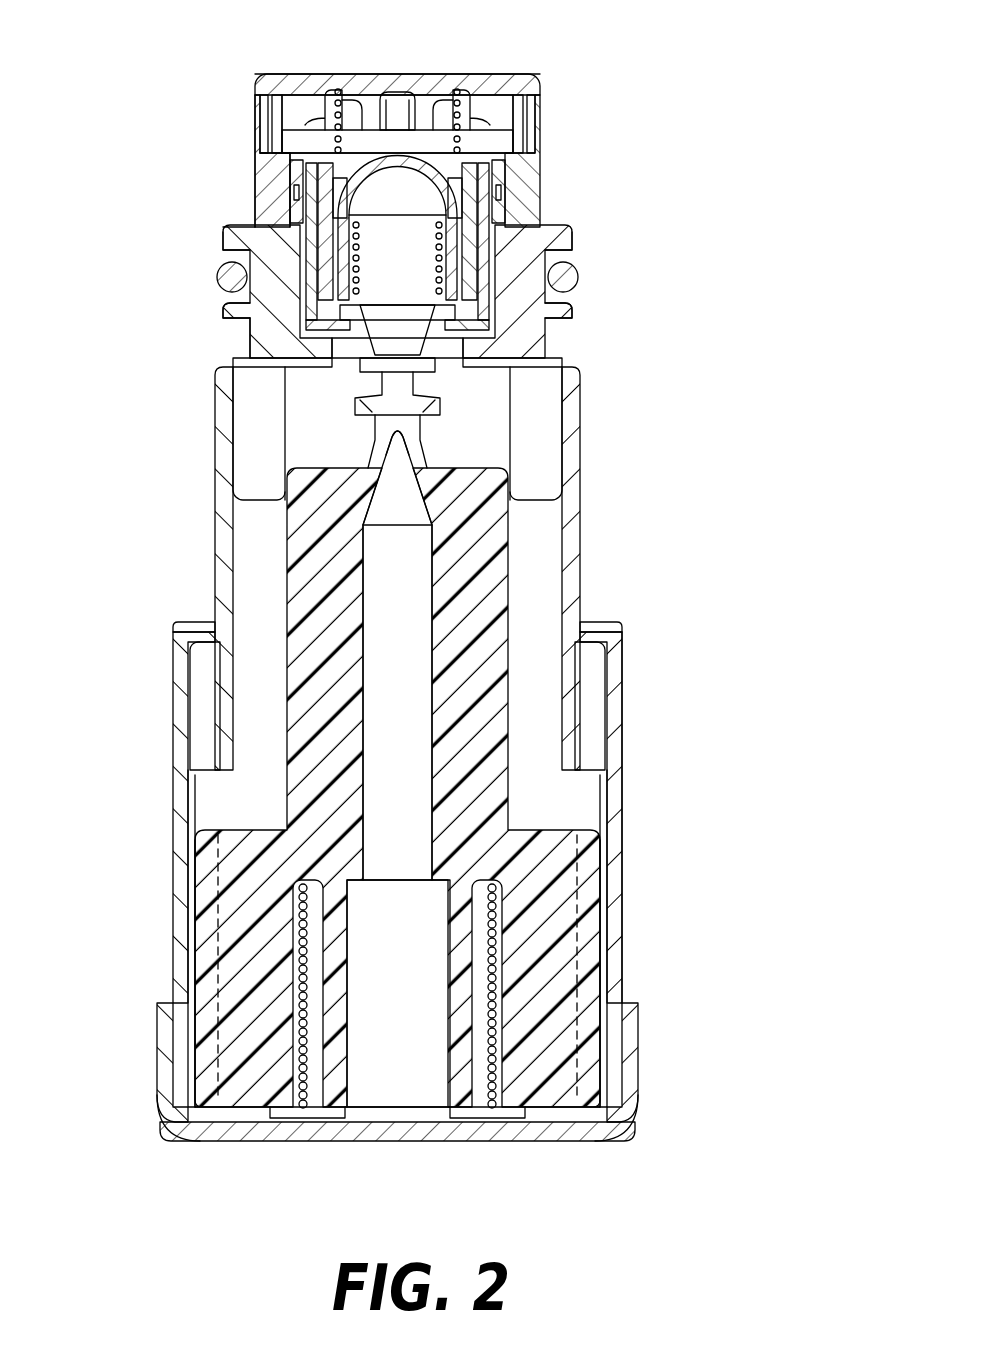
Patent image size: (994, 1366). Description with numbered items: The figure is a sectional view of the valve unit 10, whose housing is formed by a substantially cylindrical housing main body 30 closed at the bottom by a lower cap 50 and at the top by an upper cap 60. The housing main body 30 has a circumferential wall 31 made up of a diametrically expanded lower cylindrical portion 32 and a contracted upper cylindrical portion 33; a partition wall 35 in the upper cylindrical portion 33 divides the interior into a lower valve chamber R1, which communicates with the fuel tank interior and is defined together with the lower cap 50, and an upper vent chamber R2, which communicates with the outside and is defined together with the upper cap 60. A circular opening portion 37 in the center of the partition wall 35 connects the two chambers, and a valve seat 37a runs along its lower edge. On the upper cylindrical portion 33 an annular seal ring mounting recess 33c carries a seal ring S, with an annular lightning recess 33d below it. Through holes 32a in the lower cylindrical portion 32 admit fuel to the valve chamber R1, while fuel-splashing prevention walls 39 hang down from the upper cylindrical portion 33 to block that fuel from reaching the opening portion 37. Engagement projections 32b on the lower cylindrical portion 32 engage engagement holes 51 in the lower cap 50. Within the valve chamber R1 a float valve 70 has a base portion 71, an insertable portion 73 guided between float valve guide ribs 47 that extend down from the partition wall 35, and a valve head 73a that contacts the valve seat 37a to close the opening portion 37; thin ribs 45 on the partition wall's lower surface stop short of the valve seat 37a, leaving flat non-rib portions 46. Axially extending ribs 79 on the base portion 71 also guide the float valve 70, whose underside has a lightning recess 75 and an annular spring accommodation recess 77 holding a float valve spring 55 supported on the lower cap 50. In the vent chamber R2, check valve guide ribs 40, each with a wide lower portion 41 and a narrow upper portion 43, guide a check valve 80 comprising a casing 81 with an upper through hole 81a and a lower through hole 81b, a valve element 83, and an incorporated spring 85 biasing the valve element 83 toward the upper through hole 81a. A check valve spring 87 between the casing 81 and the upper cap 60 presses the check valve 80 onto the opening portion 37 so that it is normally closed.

The valve unit 10 is at (238, 128).
The housing main body 30 is at (630, 832).
The circumferential wall 31 is at (742, 462).
The lower cylindrical portion 32 is at (600, 640).
The through holes 32a is at (182, 700).
The engagement projections 32b is at (630, 1047).
The upper cylindrical portion 33 is at (575, 490).
The seal ring mounting recess 33c is at (572, 246).
The lightning recess 33d is at (236, 320).
The partition wall 35 is at (520, 350).
The opening portion 37 is at (386, 388).
The valve seat 37a is at (368, 406).
The fuel-splashing prevention walls 39 is at (212, 742).
The check valve guide ribs 40 is at (135, 145).
The lower portion 41 is at (247, 257).
The upper portion 43 is at (285, 178).
The thin ribs 45 is at (270, 362).
The non-rib portion 46 is at (298, 392).
The float valve guide ribs 47 is at (250, 486).
The lower cap 50 is at (540, 1130).
The engagement holes 51 is at (626, 1090).
The float valve spring 55 is at (300, 1062).
The upper cap 60 is at (492, 76).
The float valve 70 is at (262, 548).
The base portion 71 is at (552, 826).
The insertable portion 73 is at (505, 592).
The valve head 73a is at (410, 436).
The lightning recess 75 is at (398, 1052).
The spring accommodation recess 77 is at (313, 1085).
The ribs 79 is at (206, 905).
The check valve 80 is at (292, 210).
The casing 81 is at (515, 250).
The upper through hole 81a is at (425, 160).
The lower through hole 81b is at (546, 330).
The valve element 83 is at (372, 160).
The incorporated spring 85 is at (432, 225).
The check valve spring 87 is at (468, 132).
The valve chamber R1 is at (479, 417).
The vent chamber R2 is at (512, 145).
The seal ring S is at (582, 278).